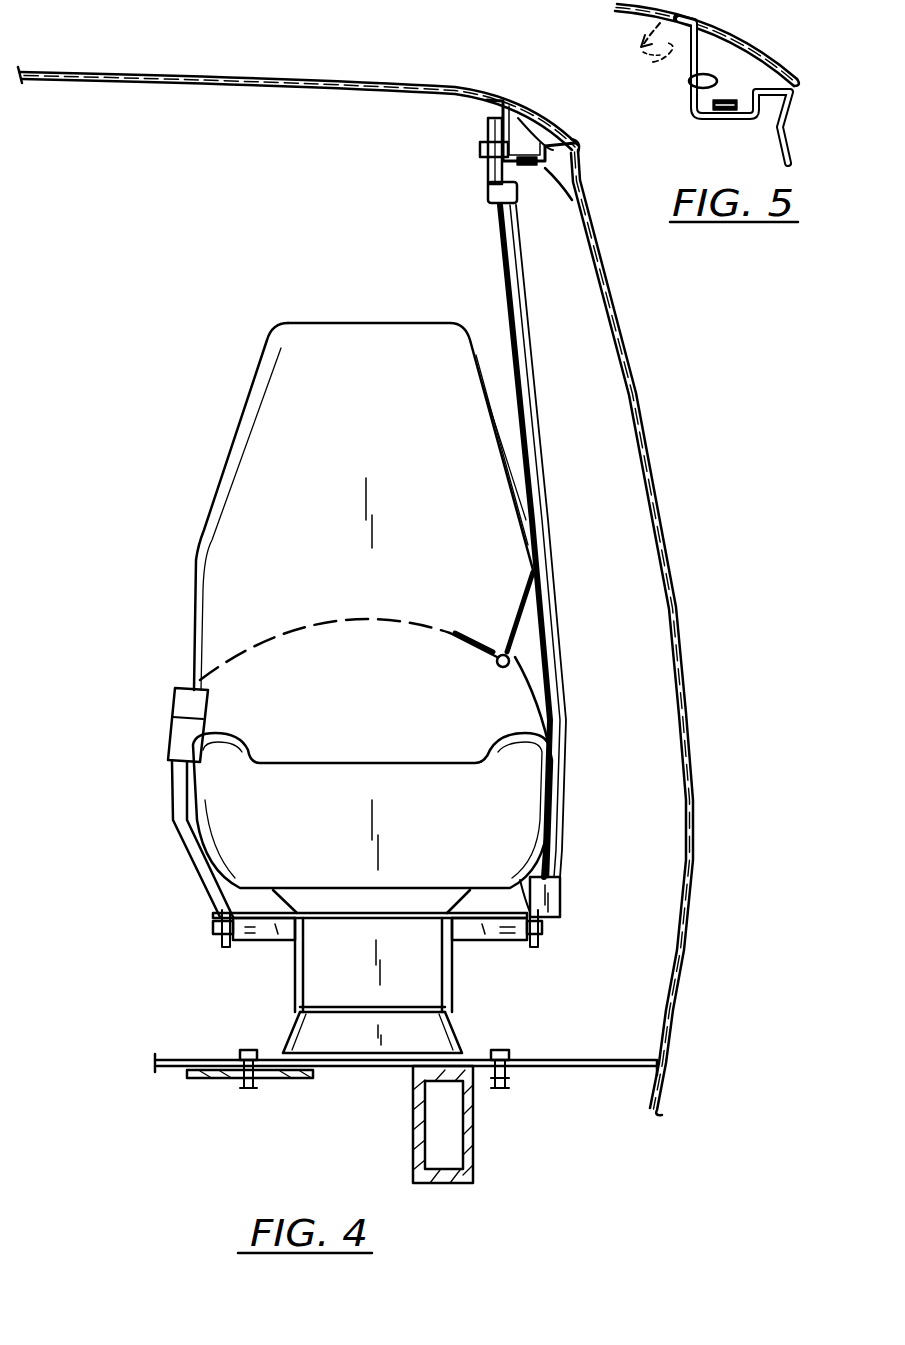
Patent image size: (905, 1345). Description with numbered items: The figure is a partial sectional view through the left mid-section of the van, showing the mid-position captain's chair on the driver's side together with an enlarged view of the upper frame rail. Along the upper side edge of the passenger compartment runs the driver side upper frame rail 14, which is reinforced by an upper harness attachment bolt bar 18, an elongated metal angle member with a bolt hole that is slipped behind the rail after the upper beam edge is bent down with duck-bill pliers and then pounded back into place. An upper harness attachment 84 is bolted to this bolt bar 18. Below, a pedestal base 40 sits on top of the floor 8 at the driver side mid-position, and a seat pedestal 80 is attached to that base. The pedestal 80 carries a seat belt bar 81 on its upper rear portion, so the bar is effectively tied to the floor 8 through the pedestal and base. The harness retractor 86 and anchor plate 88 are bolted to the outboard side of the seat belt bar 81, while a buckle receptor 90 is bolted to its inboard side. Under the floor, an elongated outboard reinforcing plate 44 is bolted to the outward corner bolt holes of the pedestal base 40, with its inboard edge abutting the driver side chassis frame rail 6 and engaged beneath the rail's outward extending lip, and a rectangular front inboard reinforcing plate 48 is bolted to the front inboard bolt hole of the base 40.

In FIG. 4, the driver side chassis frame rail 6 is at (475, 1160).
In FIG. 4, the floor 8 is at (597, 1062).
In FIG. 4, the driver side upper frame rail 14 is at (577, 205).
In FIG. 5, the driver side upper frame rail 14 is at (680, 63).
In FIG. 4, the upper harness attachment bolt bar (mid-position) 18 is at (521, 115).
In FIG. 5, the upper harness attachment bolt bar (mid-position) 18 is at (710, 63).
In FIG. 4, the pedestal base 40 is at (293, 1035).
In FIG. 4, the outboard reinforcing plate 44 is at (512, 1080).
In FIG. 4, the front inboard reinforcing plate 48 is at (215, 1080).
In FIG. 4, the seat pedestal 80 is at (455, 995).
In FIG. 4, the seat belt bar 81 is at (250, 945).
In FIG. 4, the upper harness attachment 84 is at (488, 172).
In FIG. 4, the harness retractor 86 is at (560, 903).
In FIG. 4, the anchor plate 88 is at (497, 945).
In FIG. 4, the buckle receptor 90 is at (170, 780).